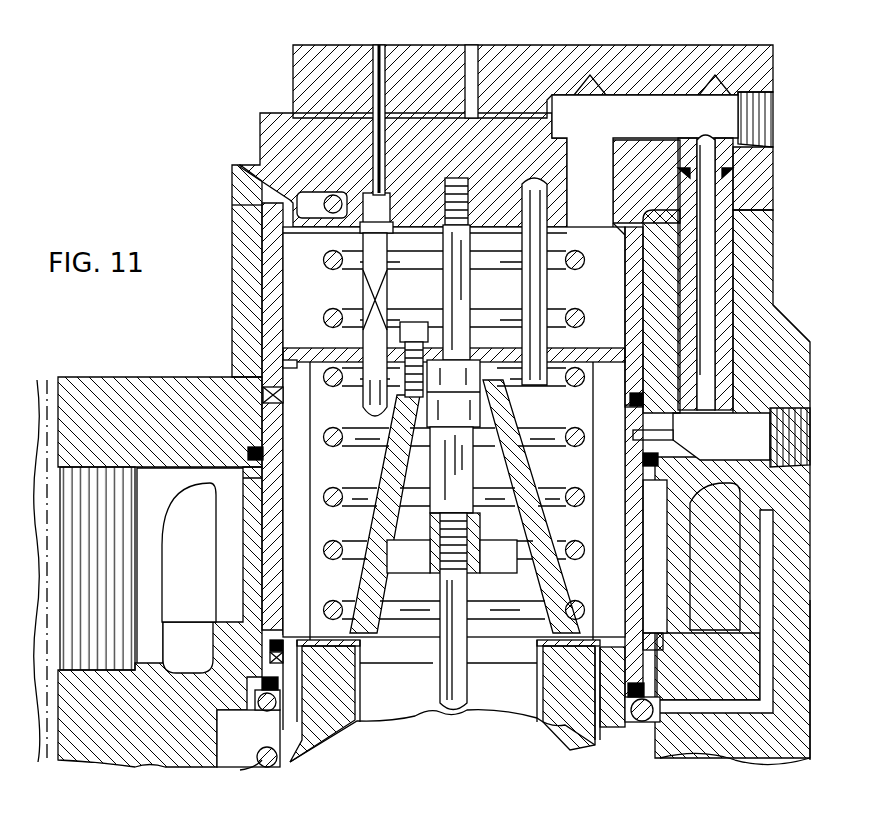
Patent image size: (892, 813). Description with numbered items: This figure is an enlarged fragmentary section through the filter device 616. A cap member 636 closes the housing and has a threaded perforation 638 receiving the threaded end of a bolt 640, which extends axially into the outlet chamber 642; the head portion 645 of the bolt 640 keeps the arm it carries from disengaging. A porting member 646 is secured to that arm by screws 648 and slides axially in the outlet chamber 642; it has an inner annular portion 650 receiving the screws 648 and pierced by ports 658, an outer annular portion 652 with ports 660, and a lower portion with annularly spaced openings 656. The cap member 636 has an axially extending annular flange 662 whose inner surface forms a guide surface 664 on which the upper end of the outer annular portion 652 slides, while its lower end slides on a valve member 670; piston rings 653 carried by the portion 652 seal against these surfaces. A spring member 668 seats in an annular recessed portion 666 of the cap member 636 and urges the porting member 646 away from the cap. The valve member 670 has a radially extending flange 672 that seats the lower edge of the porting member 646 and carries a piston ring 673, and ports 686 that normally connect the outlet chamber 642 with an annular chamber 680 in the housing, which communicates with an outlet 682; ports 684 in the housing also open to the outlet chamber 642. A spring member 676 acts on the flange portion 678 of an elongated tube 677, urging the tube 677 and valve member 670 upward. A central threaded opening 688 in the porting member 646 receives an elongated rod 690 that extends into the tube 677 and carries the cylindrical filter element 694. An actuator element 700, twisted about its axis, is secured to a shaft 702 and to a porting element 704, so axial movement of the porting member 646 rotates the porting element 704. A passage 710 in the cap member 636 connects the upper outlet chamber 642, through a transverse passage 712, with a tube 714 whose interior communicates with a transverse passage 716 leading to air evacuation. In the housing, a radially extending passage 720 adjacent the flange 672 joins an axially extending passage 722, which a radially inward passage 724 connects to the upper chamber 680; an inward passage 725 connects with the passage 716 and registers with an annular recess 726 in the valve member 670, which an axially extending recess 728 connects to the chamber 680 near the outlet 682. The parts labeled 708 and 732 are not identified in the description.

The cap member 636 is at (670, 62).
The shaft 702 is at (388, 62).
The porting element 704 is at (442, 72).
The transverse passage 712 is at (745, 108).
The passage 710 is at (602, 148).
The tube 714 is at (738, 256).
The annular recessed portion 666 is at (262, 170).
The outlet chamber 642 is at (292, 237).
The guide surface 664 is at (283, 262).
The annular flange 662 is at (272, 302).
The piston rings 653 is at (283, 366).
The outlet 682 is at (78, 465).
The retainer 708 is at (265, 478).
The axially extending recess 728 is at (245, 485).
The annularly spaced ports 684 is at (227, 622).
The annular chamber 680 is at (165, 658).
The radially extending flange 672 is at (248, 722).
The spring member 676 is at (250, 770).
The spring member 668 is at (340, 300).
The actuator element 700 is at (370, 282).
The screws 648 is at (418, 322).
The threaded perforation 638 is at (445, 243).
The bolt 640 is at (466, 287).
The head portion 645 is at (493, 390).
The inner annular portion 650 is at (500, 420).
The ports 660 is at (608, 392).
The outer annular portion 652 is at (300, 390).
The porting member 646 is at (538, 478).
The ports 686 is at (285, 560).
The ports 658 is at (437, 556).
The central threaded opening 688 is at (442, 578).
The openings 656 is at (535, 650).
The elongated rod 690 is at (450, 708).
The filter element 694 is at (572, 733).
The elongated tube 677 is at (610, 740).
The flange portion 678 is at (648, 725).
The radially extending passage 720 is at (708, 760).
The axially extending passage 722 is at (812, 660).
The radially inwardly extending passage 724 is at (778, 514).
The valve member 670 is at (630, 498).
The piston ring 673 is at (650, 632).
The inwardly extending passage 725 is at (665, 430).
The annular recess 726 is at (650, 428).
The transverse passage 716 is at (790, 428).
The block 732 is at (765, 338).
The filter device 616 is at (808, 344).